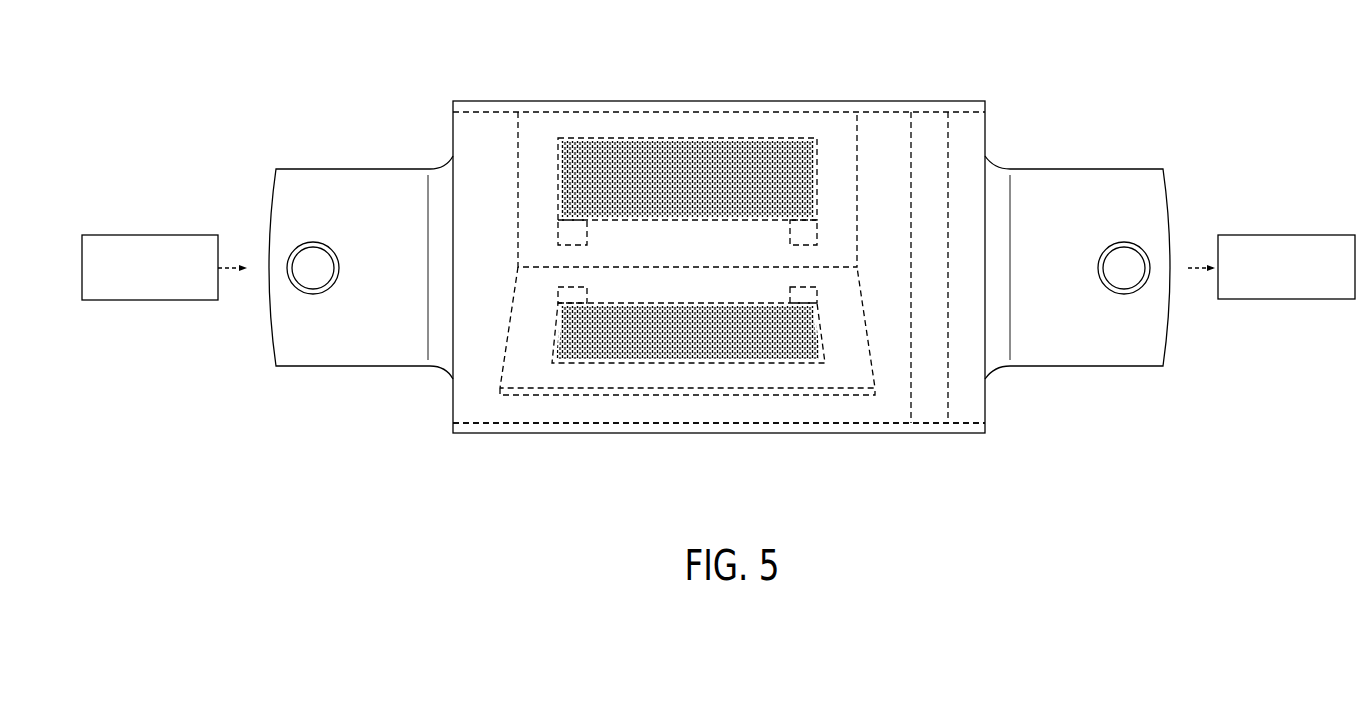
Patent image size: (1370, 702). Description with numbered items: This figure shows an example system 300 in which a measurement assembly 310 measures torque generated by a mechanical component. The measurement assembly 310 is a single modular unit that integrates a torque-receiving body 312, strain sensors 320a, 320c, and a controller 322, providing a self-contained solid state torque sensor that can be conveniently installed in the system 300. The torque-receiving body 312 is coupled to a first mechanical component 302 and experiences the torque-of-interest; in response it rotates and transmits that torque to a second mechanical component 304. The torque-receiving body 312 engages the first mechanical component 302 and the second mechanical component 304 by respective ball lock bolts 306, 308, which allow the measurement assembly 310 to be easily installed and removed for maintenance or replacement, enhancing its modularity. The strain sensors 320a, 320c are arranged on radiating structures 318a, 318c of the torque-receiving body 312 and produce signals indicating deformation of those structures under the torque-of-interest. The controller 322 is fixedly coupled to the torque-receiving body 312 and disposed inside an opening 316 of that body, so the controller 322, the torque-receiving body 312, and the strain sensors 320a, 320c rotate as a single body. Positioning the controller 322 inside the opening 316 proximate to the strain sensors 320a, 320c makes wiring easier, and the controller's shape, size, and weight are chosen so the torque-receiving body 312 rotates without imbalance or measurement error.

The example system 300 is at (304, 443).
The first mechanical component 302 is at (152, 235).
The second mechanical component 304 is at (1273, 235).
The ball lock bolt 306 is at (238, 207).
The ball lock bolt 308 is at (1197, 218).
The measurement assembly 310 is at (730, 101).
The torque-receiving body 312 is at (545, 405).
The opening 316 is at (886, 143).
The radiating structure 318a is at (836, 126).
The radiating structure 318c is at (850, 363).
The strain sensor 320a is at (606, 152).
The strain sensor 320c is at (697, 365).
The controller 322 is at (928, 410).